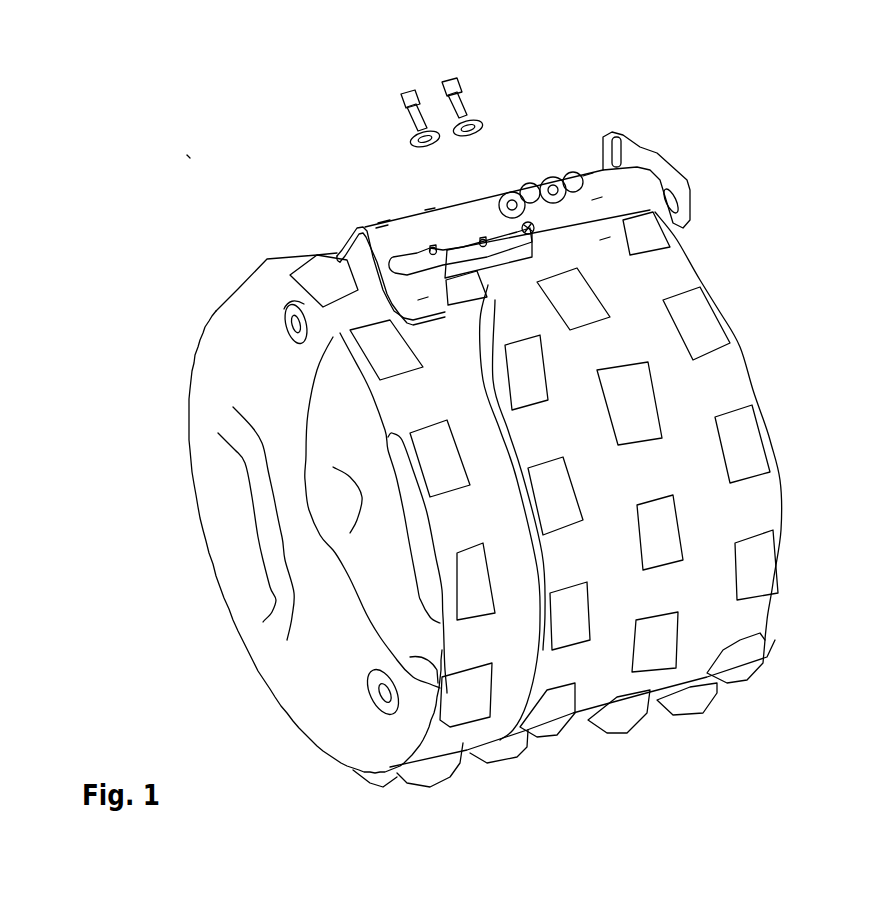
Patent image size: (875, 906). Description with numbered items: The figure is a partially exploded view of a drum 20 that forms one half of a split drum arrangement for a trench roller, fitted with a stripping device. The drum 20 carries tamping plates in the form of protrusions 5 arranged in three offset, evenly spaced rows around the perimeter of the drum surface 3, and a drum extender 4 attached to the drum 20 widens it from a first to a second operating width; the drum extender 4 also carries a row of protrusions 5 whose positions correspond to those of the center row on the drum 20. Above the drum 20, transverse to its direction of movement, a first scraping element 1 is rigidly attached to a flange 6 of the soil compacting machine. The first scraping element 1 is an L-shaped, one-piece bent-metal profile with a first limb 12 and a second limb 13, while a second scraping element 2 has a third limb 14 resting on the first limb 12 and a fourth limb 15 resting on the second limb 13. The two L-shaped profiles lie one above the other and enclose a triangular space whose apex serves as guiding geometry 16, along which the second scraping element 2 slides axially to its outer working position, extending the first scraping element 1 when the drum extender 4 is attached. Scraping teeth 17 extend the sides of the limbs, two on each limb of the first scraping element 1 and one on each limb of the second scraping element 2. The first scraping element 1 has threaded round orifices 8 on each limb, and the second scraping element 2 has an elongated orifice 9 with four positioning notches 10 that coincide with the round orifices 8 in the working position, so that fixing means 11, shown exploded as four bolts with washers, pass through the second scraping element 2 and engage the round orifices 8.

The first scraping element 1 is at (623, 188).
The second scraping element 2 is at (379, 234).
The drum surface 3 is at (685, 279).
The drum extender 4 is at (272, 292).
The protrusions 5 is at (318, 275).
The flange 6 is at (675, 173).
The round orifices 8 is at (532, 234).
The elongated orifice 9 is at (458, 250).
The positioning notches 10 is at (431, 248).
The fixing means 11 is at (447, 82).
The first limb 12 is at (597, 197).
The second limb 13 is at (588, 174).
The third limb 14 is at (383, 220).
The fourth limb 15 is at (432, 208).
The guiding geometry 16 is at (381, 229).
The scraping teeth 17 is at (607, 237).
The drum 20 is at (187, 155).